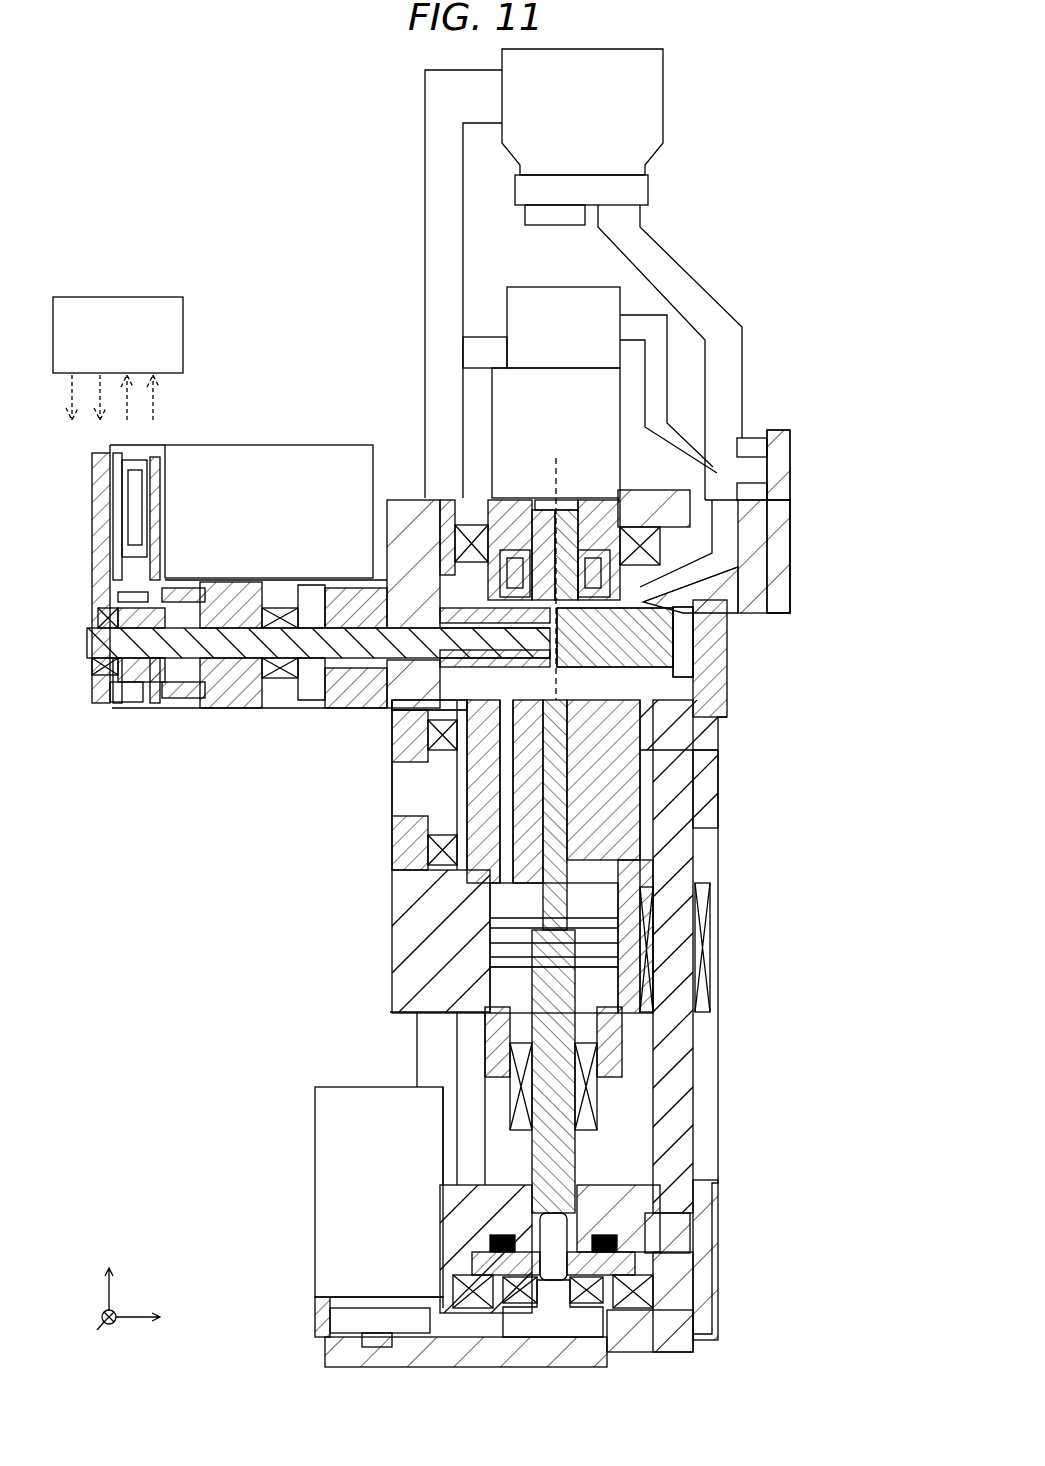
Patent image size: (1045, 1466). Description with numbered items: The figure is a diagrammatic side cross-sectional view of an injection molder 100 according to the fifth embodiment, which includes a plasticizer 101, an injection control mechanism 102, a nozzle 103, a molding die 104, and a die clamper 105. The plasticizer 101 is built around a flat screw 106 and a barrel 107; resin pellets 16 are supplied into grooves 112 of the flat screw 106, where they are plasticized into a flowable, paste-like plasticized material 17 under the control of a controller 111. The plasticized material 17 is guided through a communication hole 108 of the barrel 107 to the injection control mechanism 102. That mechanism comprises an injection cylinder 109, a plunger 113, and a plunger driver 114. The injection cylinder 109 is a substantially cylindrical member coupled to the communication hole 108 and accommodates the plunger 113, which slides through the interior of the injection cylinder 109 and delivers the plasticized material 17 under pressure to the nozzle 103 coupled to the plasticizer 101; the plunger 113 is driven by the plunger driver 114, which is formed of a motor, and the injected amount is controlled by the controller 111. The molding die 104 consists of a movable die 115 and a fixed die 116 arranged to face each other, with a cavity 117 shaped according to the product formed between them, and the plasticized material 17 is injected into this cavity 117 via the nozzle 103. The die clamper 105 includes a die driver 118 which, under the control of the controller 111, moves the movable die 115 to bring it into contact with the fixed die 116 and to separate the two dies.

The injection molder 100 is at (818, 103).
The plasticizer 101 is at (398, 440).
The injection control mechanism 102 is at (249, 777).
The nozzle 103 is at (662, 735).
The molding die 104 is at (330, 836).
The die clamper 105 is at (355, 1068).
The flat screw 106 is at (467, 490).
The barrel 107 is at (720, 632).
The communication hole 108 is at (715, 668).
The injection cylinder 109 is at (429, 705).
The plasticized material 17 is at (395, 703).
The controller 111 is at (183, 333).
The grooves 112 is at (668, 548).
The resin pellets 16 is at (778, 521).
The plunger 113 is at (215, 710).
The plunger driver 114 is at (266, 457).
The movable die 115 is at (452, 795).
The fixed die 116 is at (478, 760).
The cavity 117 is at (610, 783).
The die driver 118 is at (316, 1200).